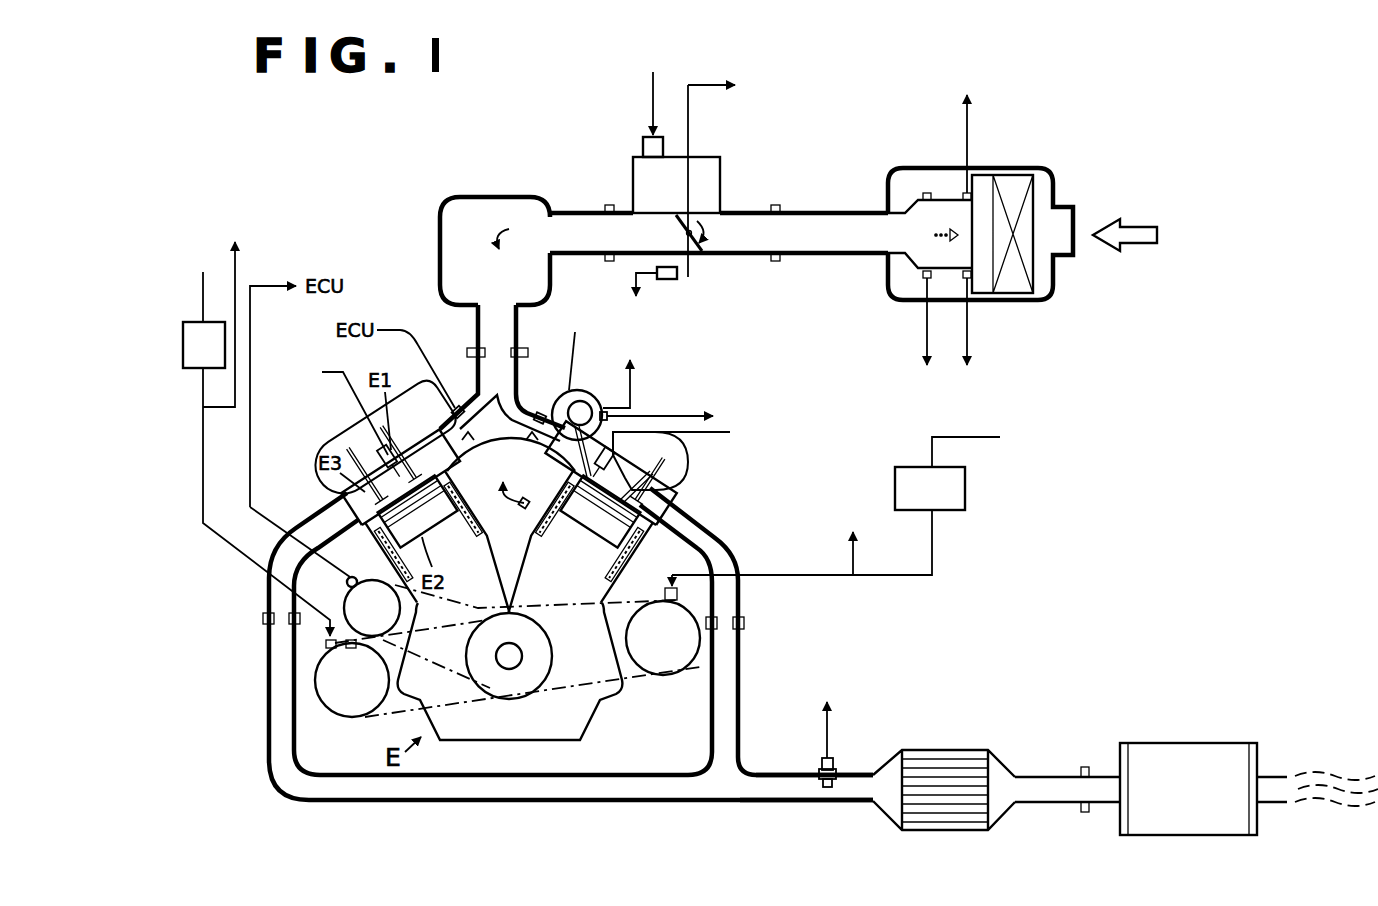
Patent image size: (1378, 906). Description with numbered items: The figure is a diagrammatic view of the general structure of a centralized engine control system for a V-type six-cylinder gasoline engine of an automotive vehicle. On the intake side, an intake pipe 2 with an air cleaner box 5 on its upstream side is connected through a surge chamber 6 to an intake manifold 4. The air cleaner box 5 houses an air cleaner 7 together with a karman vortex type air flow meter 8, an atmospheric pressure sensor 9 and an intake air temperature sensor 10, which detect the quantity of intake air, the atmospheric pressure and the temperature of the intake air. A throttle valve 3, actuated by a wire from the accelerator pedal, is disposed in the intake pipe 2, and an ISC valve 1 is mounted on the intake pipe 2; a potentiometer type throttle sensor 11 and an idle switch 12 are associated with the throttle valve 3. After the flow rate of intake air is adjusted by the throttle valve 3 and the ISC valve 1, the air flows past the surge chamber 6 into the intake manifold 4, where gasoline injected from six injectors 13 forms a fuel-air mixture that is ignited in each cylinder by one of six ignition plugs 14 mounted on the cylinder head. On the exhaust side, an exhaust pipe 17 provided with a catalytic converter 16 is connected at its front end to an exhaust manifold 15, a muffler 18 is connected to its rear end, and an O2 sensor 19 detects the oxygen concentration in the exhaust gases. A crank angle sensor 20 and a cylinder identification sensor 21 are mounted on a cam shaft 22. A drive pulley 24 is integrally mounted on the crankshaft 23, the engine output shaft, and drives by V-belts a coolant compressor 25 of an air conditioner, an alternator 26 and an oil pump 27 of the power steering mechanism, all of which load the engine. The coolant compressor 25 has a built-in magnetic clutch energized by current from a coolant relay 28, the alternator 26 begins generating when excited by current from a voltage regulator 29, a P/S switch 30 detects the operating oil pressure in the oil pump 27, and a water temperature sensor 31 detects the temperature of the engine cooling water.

The ISC valve 1 is at (721, 163).
The intake pipe 2 is at (618, 207).
The throttle valve 3 is at (700, 252).
The intake manifold 4 is at (478, 382).
The air cleaner box 5 is at (913, 168).
The surge chamber 6 is at (440, 222).
The air cleaner 7 is at (1013, 188).
The air flow meter 8 is at (925, 277).
The atmospheric pressure sensor 9 is at (968, 196).
The intake air temperature sensor 10 is at (968, 277).
The throttle sensor 11 is at (710, 228).
The idle switch 12 is at (672, 280).
The injectors 13 is at (458, 407).
The ignition plugs 14 is at (385, 452).
The exhaust manifold 15 is at (322, 505).
The catalytic converter 16 is at (940, 750).
The exhaust pipe 17 is at (742, 658).
The muffler 18 is at (1177, 744).
The O2 sensor 19 is at (836, 765).
The crank angle sensor 20 is at (596, 392).
The cylinder identification sensor 21 is at (607, 415).
The cam shaft 22 is at (562, 392).
The crankshaft 23 is at (510, 670).
The drive pulley 24 is at (530, 692).
The coolant compressor 25 is at (350, 718).
The alternator 26 is at (668, 670).
The oil pump 27 is at (345, 598).
The coolant relay 28 is at (183, 348).
The voltage regulator 29 is at (966, 487).
The P/S switch 30 is at (352, 577).
The water temperature sensor 31 is at (522, 510).